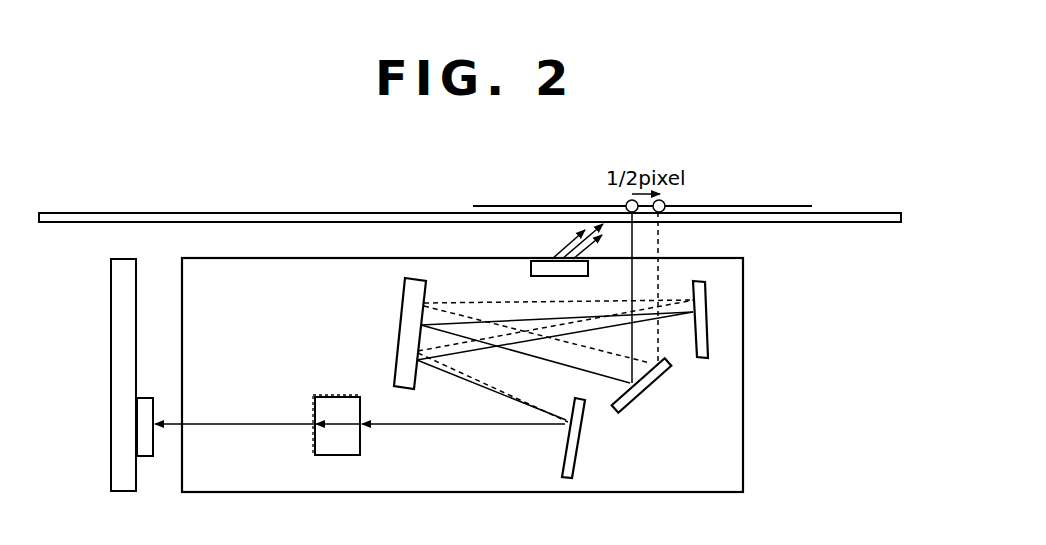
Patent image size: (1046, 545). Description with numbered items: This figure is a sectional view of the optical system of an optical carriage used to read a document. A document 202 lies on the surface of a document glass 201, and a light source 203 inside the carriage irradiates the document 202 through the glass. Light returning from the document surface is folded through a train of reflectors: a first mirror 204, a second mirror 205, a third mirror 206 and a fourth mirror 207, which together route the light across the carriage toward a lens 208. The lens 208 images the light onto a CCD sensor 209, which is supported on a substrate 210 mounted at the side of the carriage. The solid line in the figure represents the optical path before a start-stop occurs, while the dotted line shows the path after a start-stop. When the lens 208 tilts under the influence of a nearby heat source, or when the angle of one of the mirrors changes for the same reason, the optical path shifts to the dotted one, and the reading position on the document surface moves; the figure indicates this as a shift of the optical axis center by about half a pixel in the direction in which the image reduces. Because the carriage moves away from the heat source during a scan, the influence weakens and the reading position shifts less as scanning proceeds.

The document glass 201 is at (88, 213).
The document 202 is at (481, 206).
The light source 203 is at (531, 268).
The first mirror 204 is at (635, 401).
The second mirror 205 is at (400, 331).
The third mirror 206 is at (703, 359).
The fourth mirror 207 is at (577, 463).
The lens 208 is at (315, 401).
The CCD sensor 209 is at (146, 457).
The substrate 210 is at (111, 328).